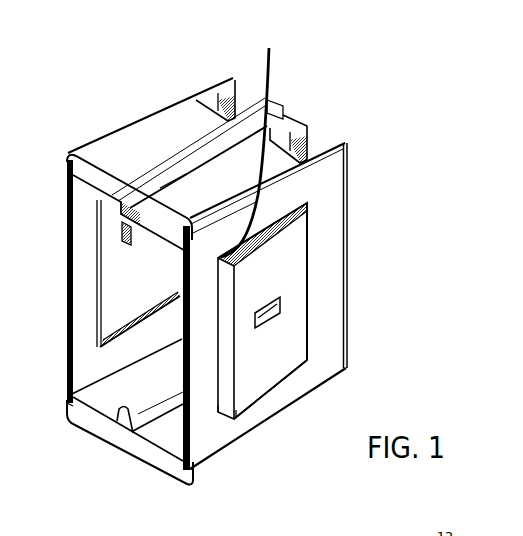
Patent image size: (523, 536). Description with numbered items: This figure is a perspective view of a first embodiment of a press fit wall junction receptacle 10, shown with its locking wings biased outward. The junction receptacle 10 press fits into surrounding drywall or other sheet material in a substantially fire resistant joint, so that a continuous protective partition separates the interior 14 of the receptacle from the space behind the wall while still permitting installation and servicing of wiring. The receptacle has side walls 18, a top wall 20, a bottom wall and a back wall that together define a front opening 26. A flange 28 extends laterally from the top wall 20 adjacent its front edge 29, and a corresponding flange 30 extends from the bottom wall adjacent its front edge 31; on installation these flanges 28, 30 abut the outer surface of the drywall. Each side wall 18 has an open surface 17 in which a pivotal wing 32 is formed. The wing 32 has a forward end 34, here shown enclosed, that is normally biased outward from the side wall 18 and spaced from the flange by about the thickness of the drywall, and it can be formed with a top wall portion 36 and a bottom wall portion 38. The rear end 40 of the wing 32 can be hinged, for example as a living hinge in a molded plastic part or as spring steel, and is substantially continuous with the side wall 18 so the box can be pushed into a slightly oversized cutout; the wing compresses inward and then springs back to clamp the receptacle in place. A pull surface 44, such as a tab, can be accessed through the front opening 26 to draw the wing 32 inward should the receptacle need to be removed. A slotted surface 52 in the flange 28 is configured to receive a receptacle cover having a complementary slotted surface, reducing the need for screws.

The junction receptacle 10 is at (246, 300).
The interior 14 is at (101, 397).
The open surface 17 is at (256, 133).
The side wall 18 is at (222, 427).
The top wall 20 is at (192, 132).
The front opening 26 is at (160, 438).
The flange 28 is at (114, 186).
The front edge 29 is at (95, 189).
The flange 30 is at (183, 481).
The front edge 31 is at (72, 403).
The pivotal wing 32 is at (288, 258).
The forward end 34 is at (268, 398).
The top wall portion 36 is at (343, 174).
The bottom wall portion 38 is at (265, 398).
The rear end 40 is at (314, 330).
The pull surface 44 is at (133, 276).
The slotted surface 52 is at (173, 200).